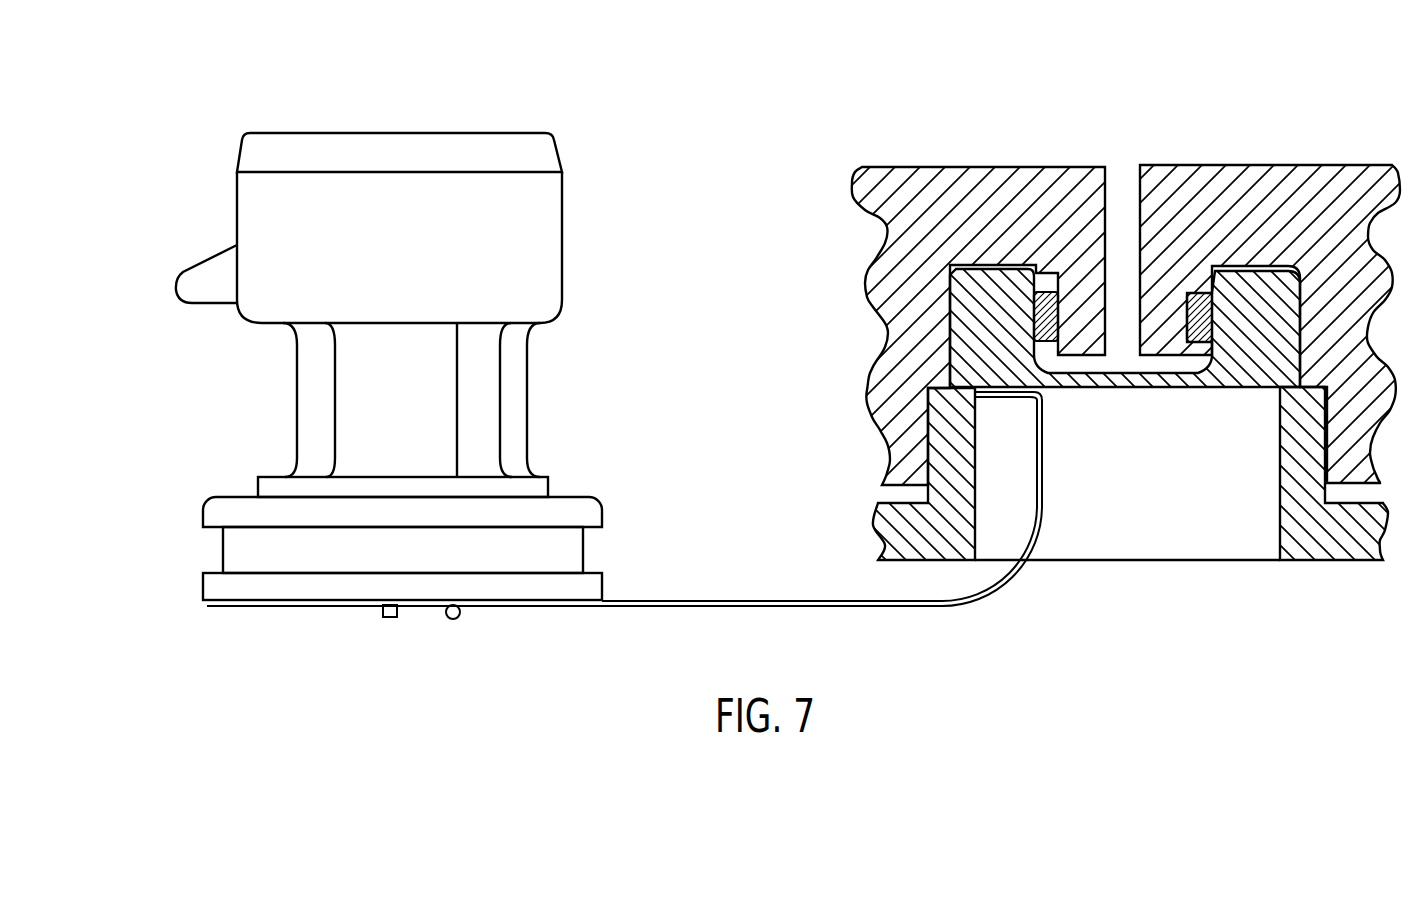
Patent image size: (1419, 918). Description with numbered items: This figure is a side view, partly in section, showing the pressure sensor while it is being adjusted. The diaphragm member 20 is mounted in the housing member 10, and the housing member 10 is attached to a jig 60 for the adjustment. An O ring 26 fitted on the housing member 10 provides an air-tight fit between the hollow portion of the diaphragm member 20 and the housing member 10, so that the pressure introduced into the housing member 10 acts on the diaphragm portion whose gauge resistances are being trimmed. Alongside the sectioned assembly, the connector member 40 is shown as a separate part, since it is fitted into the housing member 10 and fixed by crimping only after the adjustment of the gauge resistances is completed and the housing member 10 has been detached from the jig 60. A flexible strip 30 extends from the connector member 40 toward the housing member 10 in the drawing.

The housing member 10 is at (900, 227).
The diaphragm member 20 is at (960, 308).
The O ring 26 is at (1050, 300).
The flexible sheet 30 is at (748, 600).
The connector member 40 is at (557, 233).
The jig 60 is at (878, 537).